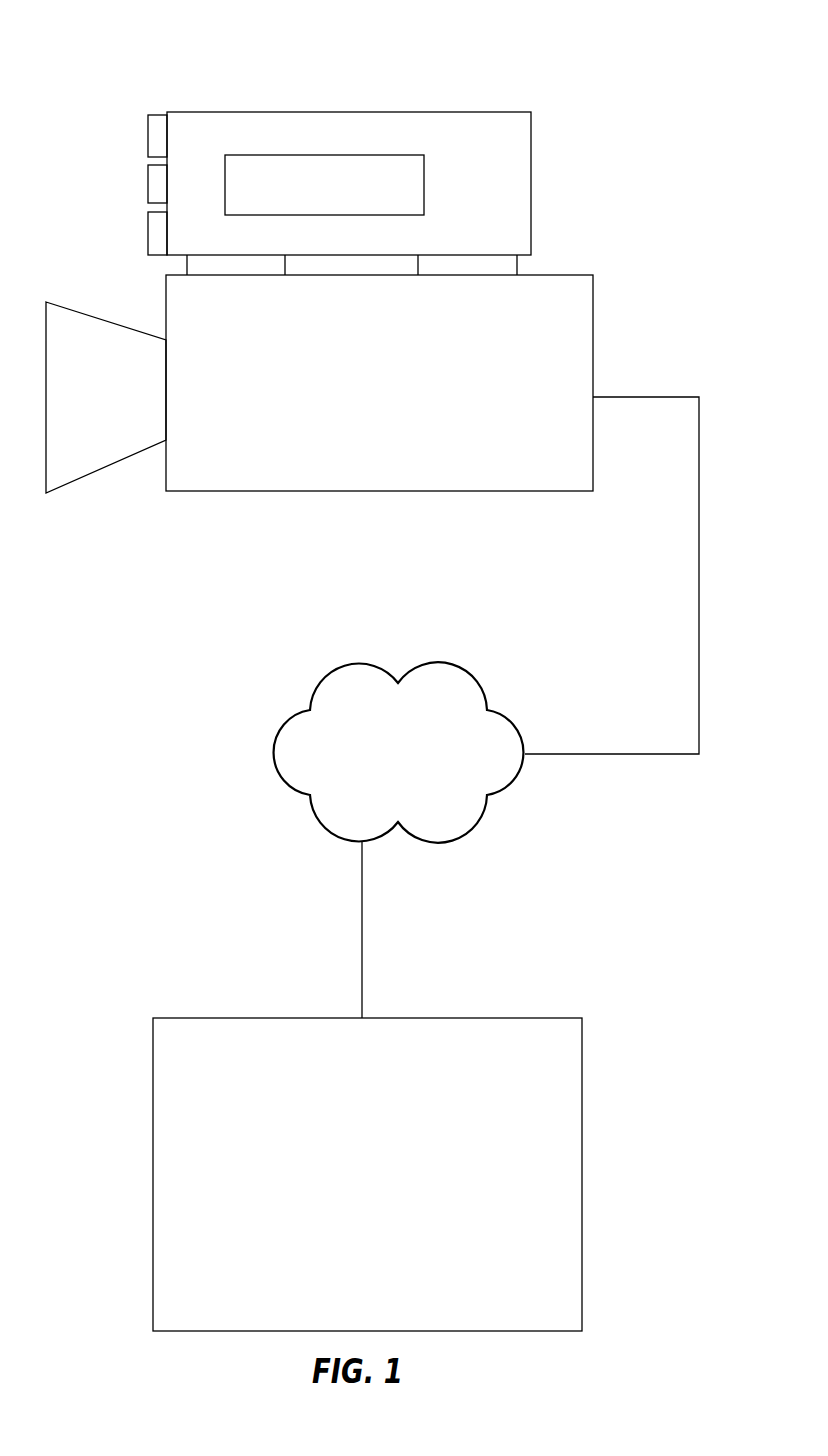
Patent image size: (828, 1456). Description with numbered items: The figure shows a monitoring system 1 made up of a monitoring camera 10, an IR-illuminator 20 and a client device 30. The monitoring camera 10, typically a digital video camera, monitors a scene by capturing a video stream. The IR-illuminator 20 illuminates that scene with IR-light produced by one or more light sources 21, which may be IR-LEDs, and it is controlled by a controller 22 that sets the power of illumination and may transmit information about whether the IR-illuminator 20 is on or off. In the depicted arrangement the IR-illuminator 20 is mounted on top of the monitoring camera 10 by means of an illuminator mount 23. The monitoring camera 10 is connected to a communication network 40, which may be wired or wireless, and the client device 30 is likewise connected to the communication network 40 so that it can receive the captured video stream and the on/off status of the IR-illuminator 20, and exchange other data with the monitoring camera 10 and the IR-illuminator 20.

The monitoring system 1 is at (163, 71).
The monitoring camera 10 is at (583, 328).
The IR-illuminator 20 is at (510, 183).
The light source 21 is at (155, 135).
The controller 22 is at (413, 187).
The illuminator mount 23 is at (512, 267).
The client device 30 is at (572, 1233).
The communication network 40 is at (399, 752).